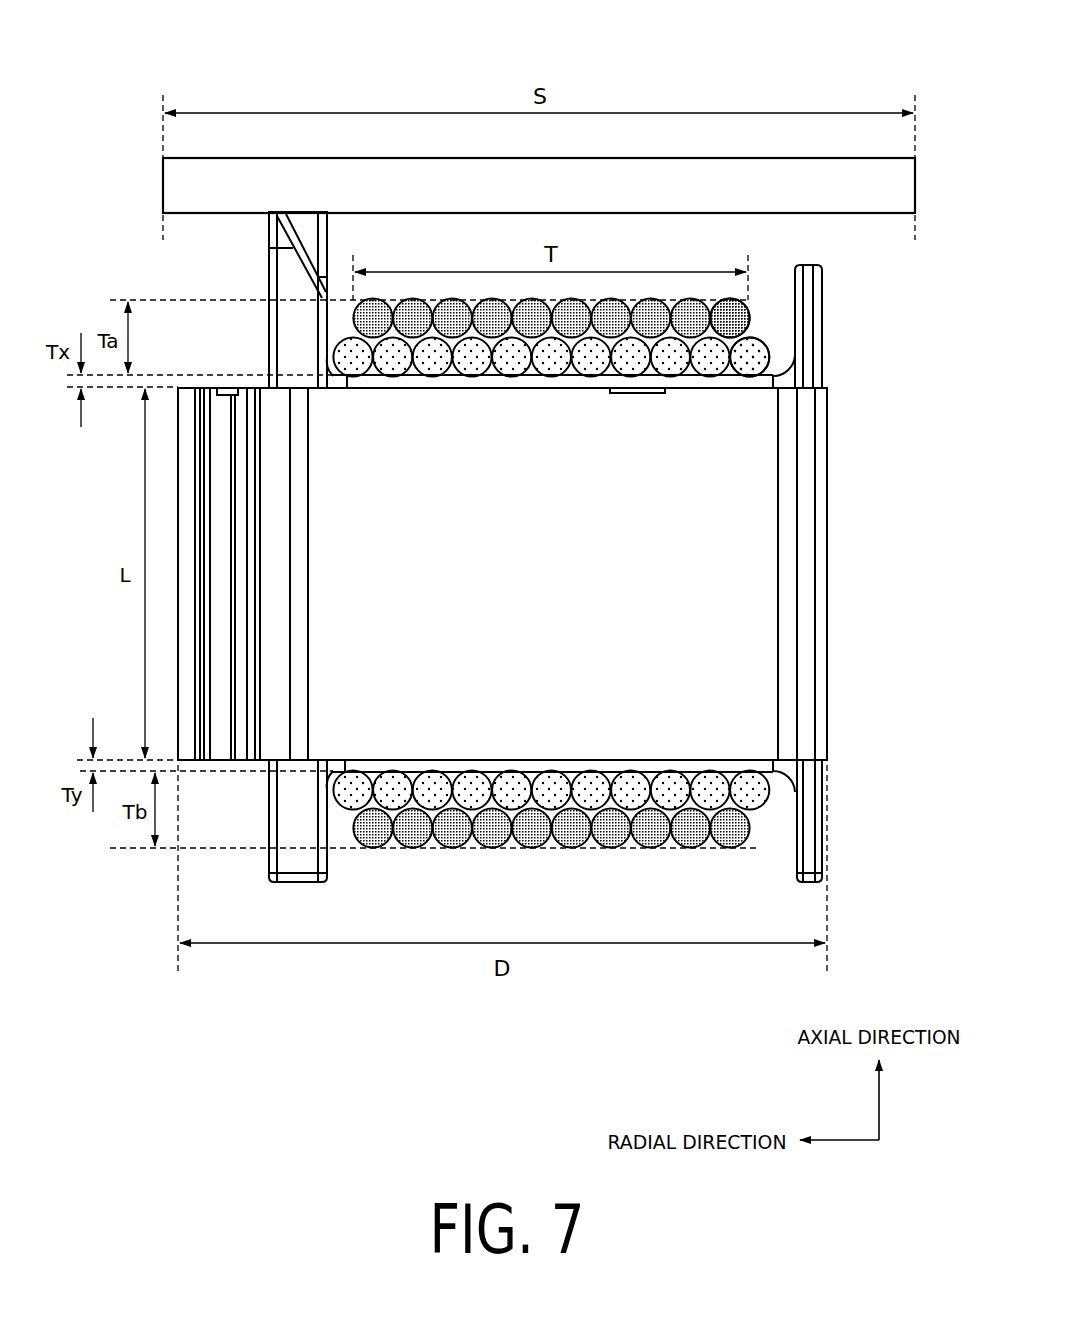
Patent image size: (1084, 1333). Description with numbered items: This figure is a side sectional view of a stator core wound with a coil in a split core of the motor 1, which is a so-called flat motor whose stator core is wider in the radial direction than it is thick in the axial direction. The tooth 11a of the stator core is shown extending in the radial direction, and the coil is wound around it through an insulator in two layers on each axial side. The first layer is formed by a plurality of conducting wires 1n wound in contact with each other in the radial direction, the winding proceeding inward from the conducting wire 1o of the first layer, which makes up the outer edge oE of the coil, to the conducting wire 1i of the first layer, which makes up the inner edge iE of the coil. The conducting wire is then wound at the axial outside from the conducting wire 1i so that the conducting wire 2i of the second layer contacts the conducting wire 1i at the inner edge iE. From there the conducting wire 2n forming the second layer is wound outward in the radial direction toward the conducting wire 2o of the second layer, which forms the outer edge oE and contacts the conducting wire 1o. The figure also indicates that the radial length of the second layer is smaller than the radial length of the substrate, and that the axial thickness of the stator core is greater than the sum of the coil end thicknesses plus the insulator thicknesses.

The motor 1 is at (638, 57).
The conducting wire of the first layer 1o is at (333, 355).
The conducting wire of the second layer 2o is at (353, 318).
The conducting wire of the first layer 1i is at (768, 362).
The conducting wire of the second layer 2i is at (750, 322).
The conducting wires forming the first layer 1n is at (770, 752).
The conducting wire forming the second layer 2n is at (750, 853).
The tooth 11a is at (827, 593).
The outer edge oE is at (205, 305).
The inner edge iE is at (887, 290).